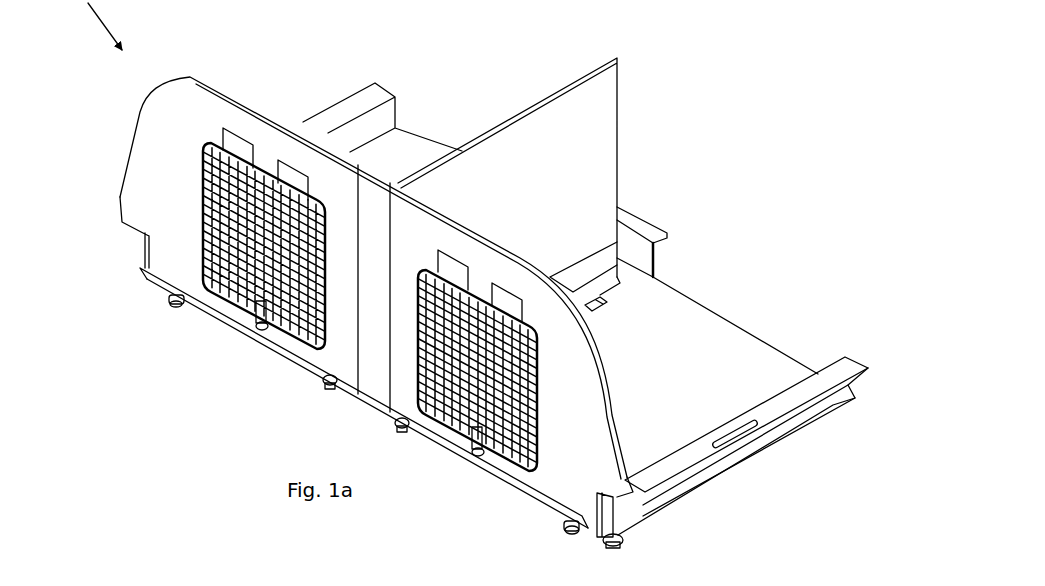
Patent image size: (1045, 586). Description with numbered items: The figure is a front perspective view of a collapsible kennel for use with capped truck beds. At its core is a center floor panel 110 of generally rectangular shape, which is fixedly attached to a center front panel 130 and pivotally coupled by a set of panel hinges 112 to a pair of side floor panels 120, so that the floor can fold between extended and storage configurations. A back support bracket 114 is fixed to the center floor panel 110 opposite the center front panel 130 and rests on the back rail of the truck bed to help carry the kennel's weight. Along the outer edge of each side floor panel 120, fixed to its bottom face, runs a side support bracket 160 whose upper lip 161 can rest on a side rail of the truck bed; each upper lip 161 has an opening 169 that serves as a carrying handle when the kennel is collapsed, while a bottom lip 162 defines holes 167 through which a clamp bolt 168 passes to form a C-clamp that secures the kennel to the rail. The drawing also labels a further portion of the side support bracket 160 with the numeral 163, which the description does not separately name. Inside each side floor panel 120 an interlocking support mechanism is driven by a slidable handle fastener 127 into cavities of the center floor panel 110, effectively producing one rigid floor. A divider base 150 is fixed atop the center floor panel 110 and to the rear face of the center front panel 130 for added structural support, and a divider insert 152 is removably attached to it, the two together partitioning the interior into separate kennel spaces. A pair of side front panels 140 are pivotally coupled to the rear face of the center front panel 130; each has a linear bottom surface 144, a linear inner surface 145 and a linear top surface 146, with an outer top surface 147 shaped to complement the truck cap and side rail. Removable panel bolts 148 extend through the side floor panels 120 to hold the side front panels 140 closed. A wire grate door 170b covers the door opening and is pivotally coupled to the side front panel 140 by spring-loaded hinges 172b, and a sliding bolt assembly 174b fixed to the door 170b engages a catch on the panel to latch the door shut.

The center floor panel 110 is at (620, 283).
The panel hinges 112 is at (617, 298).
The back support bracket 114 is at (632, 243).
The side floor panels 120 is at (427, 130).
The handle fastener 127 is at (323, 388).
The center front panel 130 is at (373, 382).
The side front panels 140 is at (112, 203).
The linear bottom surface 144 is at (220, 313).
The linear inner surface 145 is at (303, 362).
The linear top surface 146 is at (240, 92).
The outer top surface 147 is at (197, 75).
The panel bolts 148 is at (173, 302).
The divider base 150 is at (590, 263).
The divider insert 152 is at (557, 107).
The side support bracket 160 is at (390, 77).
The upper lip 161 is at (343, 110).
The bottom lip 162 is at (697, 492).
The rail web 163 is at (850, 388).
The holes 167 is at (847, 405).
The clamp bolt 168 is at (618, 540).
The opening 169 is at (740, 435).
The wire grate door 170b is at (202, 196).
The spring-loaded hinges 172b is at (278, 160).
The sliding bolt assembly 174b is at (257, 323).